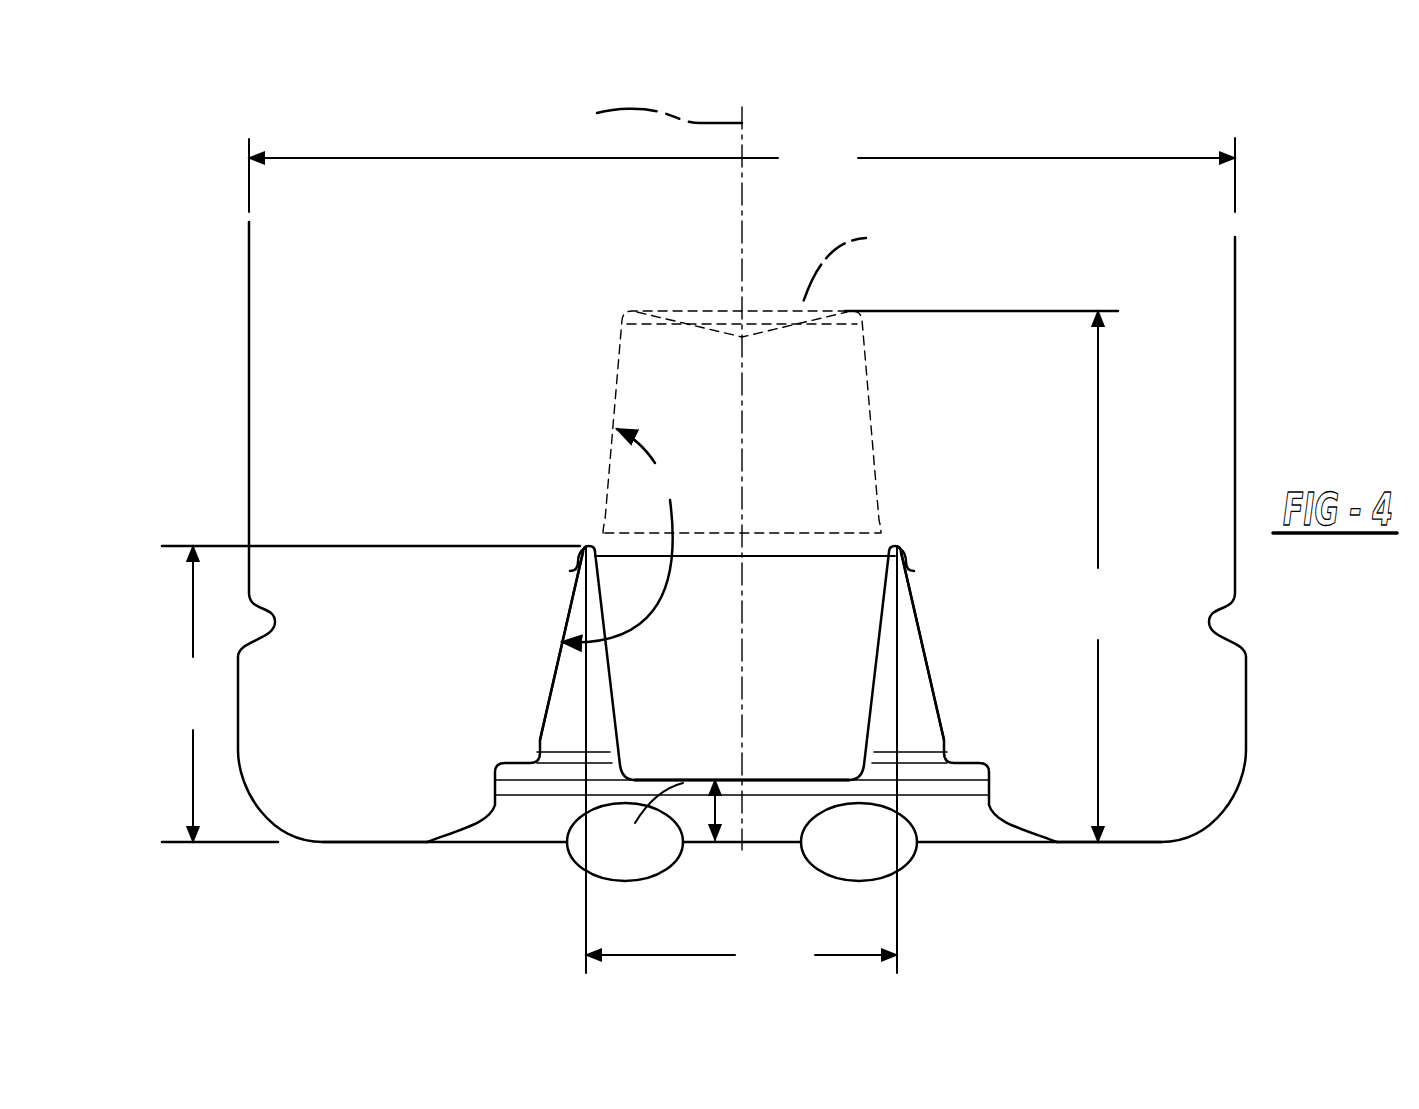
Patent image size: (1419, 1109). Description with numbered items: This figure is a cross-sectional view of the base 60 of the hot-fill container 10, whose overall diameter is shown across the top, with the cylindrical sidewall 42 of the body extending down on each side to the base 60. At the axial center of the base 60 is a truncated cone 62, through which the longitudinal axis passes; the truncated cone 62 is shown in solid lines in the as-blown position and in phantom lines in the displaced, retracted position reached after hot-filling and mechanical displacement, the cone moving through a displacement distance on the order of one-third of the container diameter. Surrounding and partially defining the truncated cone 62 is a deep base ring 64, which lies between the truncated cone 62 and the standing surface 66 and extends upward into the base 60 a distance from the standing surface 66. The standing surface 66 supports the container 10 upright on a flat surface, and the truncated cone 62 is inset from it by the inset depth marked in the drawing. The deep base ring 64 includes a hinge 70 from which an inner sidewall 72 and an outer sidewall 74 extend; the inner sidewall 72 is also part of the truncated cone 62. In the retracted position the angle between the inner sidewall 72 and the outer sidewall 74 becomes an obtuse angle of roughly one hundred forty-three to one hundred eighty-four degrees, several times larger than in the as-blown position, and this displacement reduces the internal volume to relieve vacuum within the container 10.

The container 10 is at (181, 146).
The cylindrical sidewall 42 is at (249, 407).
The base 60 is at (411, 868).
The truncated cone 62 is at (803, 782).
The deep base ring 64 is at (548, 700).
The standing surface 66 is at (353, 843).
The hinge 70 is at (570, 571).
The inner sidewall 72 is at (603, 810).
The outer sidewall 74 is at (548, 700).